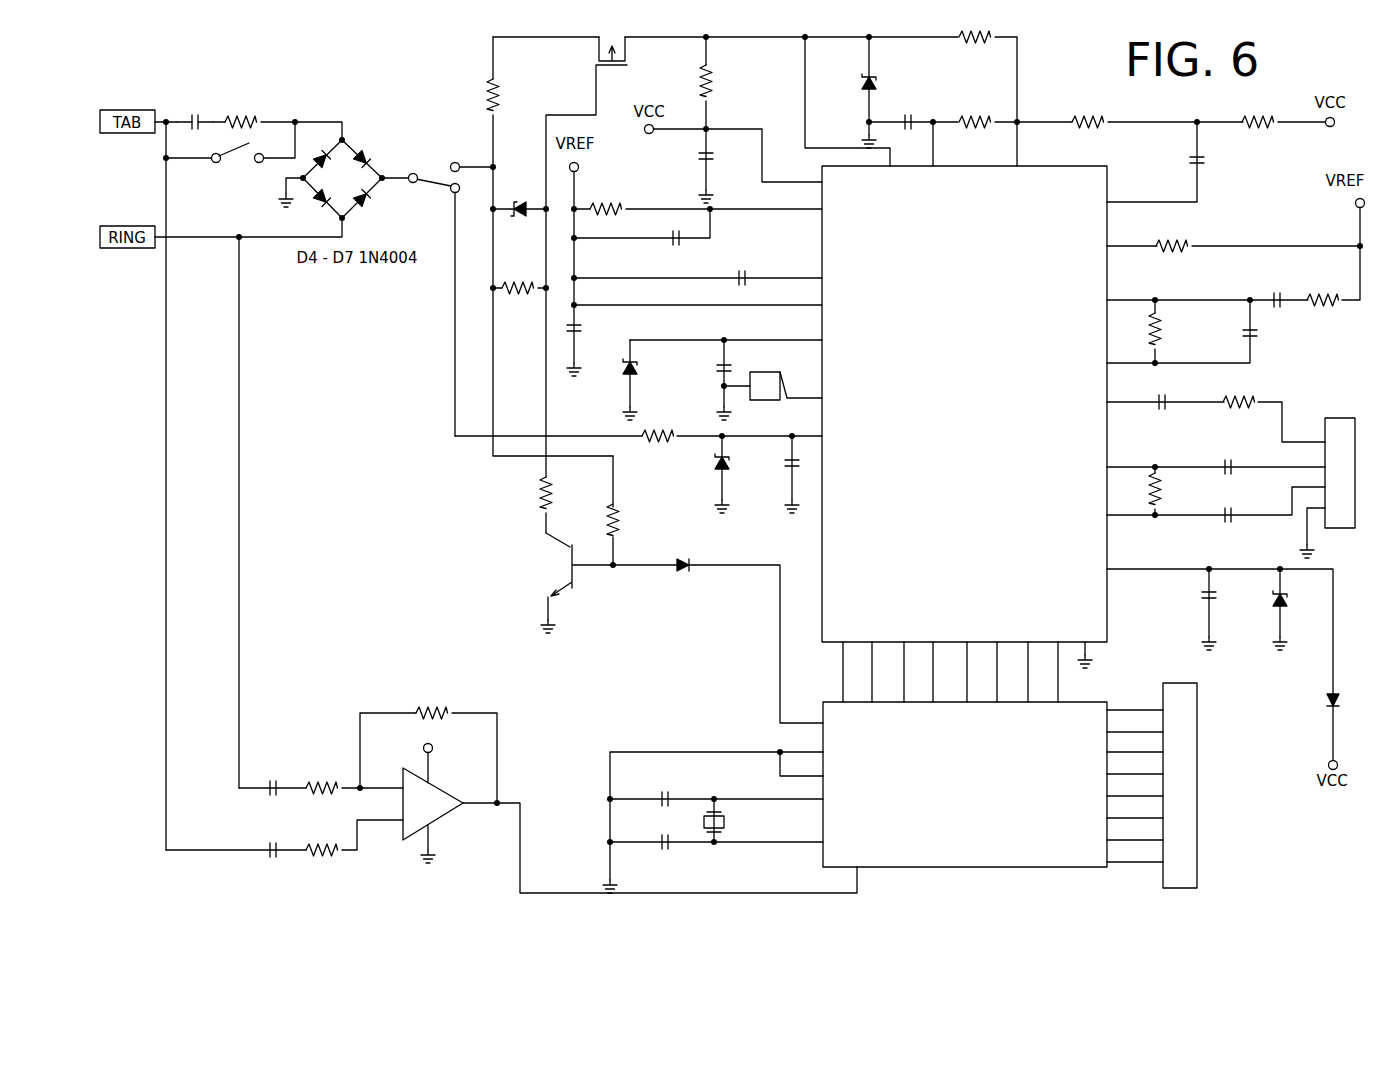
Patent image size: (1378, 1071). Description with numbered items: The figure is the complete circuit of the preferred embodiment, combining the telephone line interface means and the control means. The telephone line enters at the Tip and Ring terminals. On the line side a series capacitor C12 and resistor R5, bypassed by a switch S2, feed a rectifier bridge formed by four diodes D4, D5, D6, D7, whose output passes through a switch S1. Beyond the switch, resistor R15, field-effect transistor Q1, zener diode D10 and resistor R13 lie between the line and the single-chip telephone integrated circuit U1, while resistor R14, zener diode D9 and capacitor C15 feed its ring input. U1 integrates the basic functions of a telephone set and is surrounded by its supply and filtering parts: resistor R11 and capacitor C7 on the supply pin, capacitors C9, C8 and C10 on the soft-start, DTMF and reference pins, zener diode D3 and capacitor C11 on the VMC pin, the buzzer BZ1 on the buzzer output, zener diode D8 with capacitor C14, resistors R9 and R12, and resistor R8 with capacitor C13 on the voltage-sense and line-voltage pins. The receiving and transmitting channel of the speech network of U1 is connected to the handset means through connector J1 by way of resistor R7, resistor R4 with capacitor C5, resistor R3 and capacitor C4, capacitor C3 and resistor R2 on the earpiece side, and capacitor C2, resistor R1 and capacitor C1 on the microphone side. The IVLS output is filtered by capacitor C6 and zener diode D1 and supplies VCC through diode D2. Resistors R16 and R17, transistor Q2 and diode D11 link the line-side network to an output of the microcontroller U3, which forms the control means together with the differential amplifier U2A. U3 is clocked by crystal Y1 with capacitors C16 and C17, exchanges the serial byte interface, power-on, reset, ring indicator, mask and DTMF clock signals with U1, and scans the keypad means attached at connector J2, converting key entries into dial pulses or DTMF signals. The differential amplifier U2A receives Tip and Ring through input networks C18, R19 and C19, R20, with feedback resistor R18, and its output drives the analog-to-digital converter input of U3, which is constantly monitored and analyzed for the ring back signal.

The capacitor 820nF C12 is at (197, 102).
The resistor R5 is at (523, 154).
The switch S2 is at (238, 163).
The bridge diode D4 is at (317, 147).
The bridge diode D5 is at (314, 210).
The bridge diode D6 is at (375, 207).
The bridge diode D7 is at (366, 147).
The switch S1 is at (437, 290).
The resistor 5.6 R15 is at (530, 246).
The MOSFET BSS92 Q1 is at (581, 257).
The zener diode 6.2V D10 is at (519, 209).
The resistor 22k R13 is at (519, 290).
The resistor R11 is at (1012, 92).
The capacitor C7 is at (685, 166).
The capacitor 100nF C9 is at (642, 236).
The capacitor 100nF C8 is at (698, 273).
The capacitor 10uF C10 is at (593, 342).
The zener diode 5.6V D3 is at (613, 380).
The capacitor 470uF C11 is at (698, 380).
The buzzer BZ1 is at (773, 396).
The resistor 1k R14 is at (638, 436).
The zener diode 27V D9 is at (704, 474).
The capacitor 10uF C15 is at (773, 474).
The resistor 22k R16 is at (526, 505).
The resistor 330k R17 is at (635, 510).
The transistor BF393 Q2 is at (559, 583).
The diode BAT42 D11 is at (718, 627).
The zener diode 13V D8 is at (850, 92).
The capacitor 1uF C14 is at (901, 120).
The resistor 82k R9 is at (975, 120).
The resistor 30 R12 is at (975, 57).
The resistor 300 R8 is at (1130, 119).
The capacitor 100nF C13 is at (1155, 162).
The resistor 1.5k R7 is at (1233, 240).
The resistor 10k R4 is at (1323, 300).
The capacitor 1uF C5 is at (1279, 300).
The resistor 33k R3 is at (1170, 331).
The capacitor 2.2nF C4 is at (1203, 331).
The capacitor 15uF C3 is at (1165, 403).
The resistor 51 R2 is at (1274, 408).
The handset means connector J1 is at (1331, 461).
The capacitor 47nF C2 is at (1216, 464).
The resistor 2k R1 is at (1166, 491).
The capacitor 47nF C1 is at (1216, 515).
The capacitor 47nF C6 is at (1186, 609).
The zener diode 3.9V D1 is at (1259, 609).
The diode BAT42 D2 is at (1304, 719).
The microprocessor means U1 is at (966, 423).
The microcontroller means U3 is at (799, 786).
The keypad means connector J2 is at (1213, 785).
The capacitor 30pF C16 is at (716, 798).
The capacitor 30pF C17 is at (716, 864).
The crystal 3.58MHz Y1 is at (739, 832).
The differential amplifier means U2A is at (438, 810).
The resistor 499k R18 is at (428, 735).
The capacitor 1nF C18 is at (272, 767).
The resistor 499k R19 is at (354, 766).
The capacitor 1nF C19 is at (236, 849).
The resistor 499k R20 is at (354, 848).